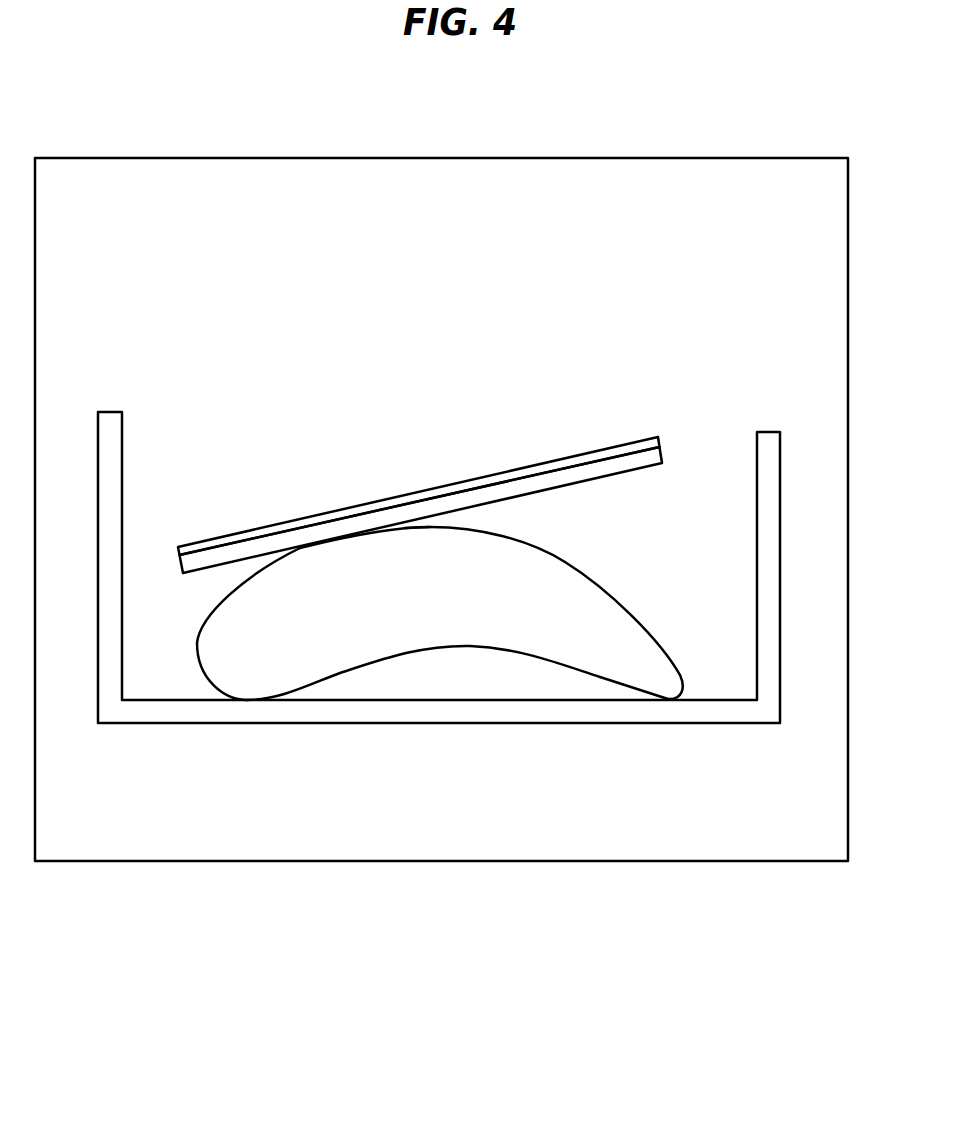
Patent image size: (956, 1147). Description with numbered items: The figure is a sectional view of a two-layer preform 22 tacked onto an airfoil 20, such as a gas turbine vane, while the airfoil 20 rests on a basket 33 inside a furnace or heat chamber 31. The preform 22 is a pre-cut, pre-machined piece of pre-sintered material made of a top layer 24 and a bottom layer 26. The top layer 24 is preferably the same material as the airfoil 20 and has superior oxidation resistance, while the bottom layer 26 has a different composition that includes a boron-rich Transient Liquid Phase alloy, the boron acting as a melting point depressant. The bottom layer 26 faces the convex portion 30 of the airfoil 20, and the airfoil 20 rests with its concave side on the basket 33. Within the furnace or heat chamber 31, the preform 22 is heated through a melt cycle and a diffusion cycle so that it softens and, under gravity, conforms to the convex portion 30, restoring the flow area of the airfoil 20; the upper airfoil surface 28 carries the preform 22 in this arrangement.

The airfoil 20 is at (440, 601).
The preform 22 is at (443, 449).
The top layer 24 is at (550, 460).
The bottom layer 26 is at (633, 462).
The upper lens surface 28 is at (563, 560).
The convex portion 30 is at (417, 528).
The furnace or heat chamber 31 is at (153, 892).
The basket 33 is at (370, 668).